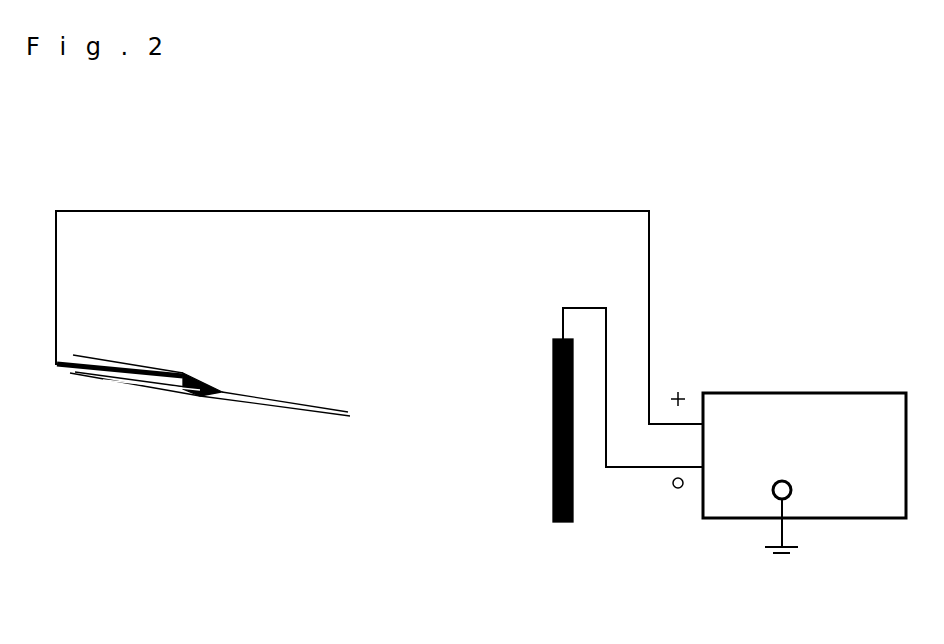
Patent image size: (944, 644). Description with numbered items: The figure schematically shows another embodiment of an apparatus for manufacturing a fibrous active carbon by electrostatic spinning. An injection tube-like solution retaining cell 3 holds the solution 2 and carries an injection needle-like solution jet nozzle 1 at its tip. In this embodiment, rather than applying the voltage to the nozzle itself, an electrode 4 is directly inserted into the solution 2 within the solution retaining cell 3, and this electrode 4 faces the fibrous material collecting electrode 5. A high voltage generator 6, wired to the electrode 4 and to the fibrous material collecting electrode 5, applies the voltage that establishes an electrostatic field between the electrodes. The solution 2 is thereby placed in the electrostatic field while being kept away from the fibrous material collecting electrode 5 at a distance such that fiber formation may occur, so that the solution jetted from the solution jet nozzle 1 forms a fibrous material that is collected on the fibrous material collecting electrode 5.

The solution jet nozzle 1 is at (312, 412).
The solution 2 is at (203, 393).
The solution retaining cell 3 is at (183, 373).
The electrode 4 is at (68, 370).
The fibrous material collecting electrode 5 is at (552, 500).
The high voltage generator 6 is at (777, 392).